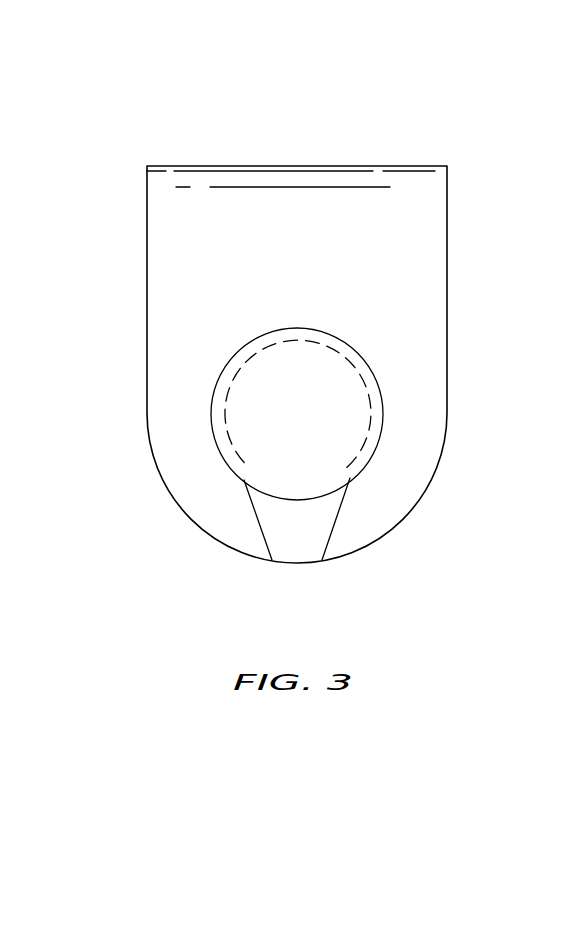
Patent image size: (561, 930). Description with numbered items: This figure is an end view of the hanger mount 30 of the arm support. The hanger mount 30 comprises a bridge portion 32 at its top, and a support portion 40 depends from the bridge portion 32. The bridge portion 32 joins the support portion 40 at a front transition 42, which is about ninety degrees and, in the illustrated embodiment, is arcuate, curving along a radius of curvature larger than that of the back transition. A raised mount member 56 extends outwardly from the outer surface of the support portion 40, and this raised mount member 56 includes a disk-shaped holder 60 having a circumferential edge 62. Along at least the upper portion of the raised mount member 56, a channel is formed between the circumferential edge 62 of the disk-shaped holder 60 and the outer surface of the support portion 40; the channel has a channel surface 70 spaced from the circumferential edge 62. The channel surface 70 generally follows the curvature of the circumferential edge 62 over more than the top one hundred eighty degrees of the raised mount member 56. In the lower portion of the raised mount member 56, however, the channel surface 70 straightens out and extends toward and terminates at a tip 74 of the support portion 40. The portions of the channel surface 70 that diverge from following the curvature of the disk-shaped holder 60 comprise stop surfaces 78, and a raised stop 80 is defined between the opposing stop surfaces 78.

The hanger mount 30 is at (334, 104).
The bridge portion 32 is at (210, 165).
The support portion 40 is at (412, 305).
The front transition 42 is at (407, 201).
The raised mount member 56 is at (382, 376).
The disk-shaped holder 60 is at (267, 405).
The circumferential edge 62 is at (283, 328).
The channel surface 70 is at (370, 402).
The tip 74 is at (285, 564).
The stop surfaces 78 is at (257, 522).
The raised stop 80 is at (303, 535).